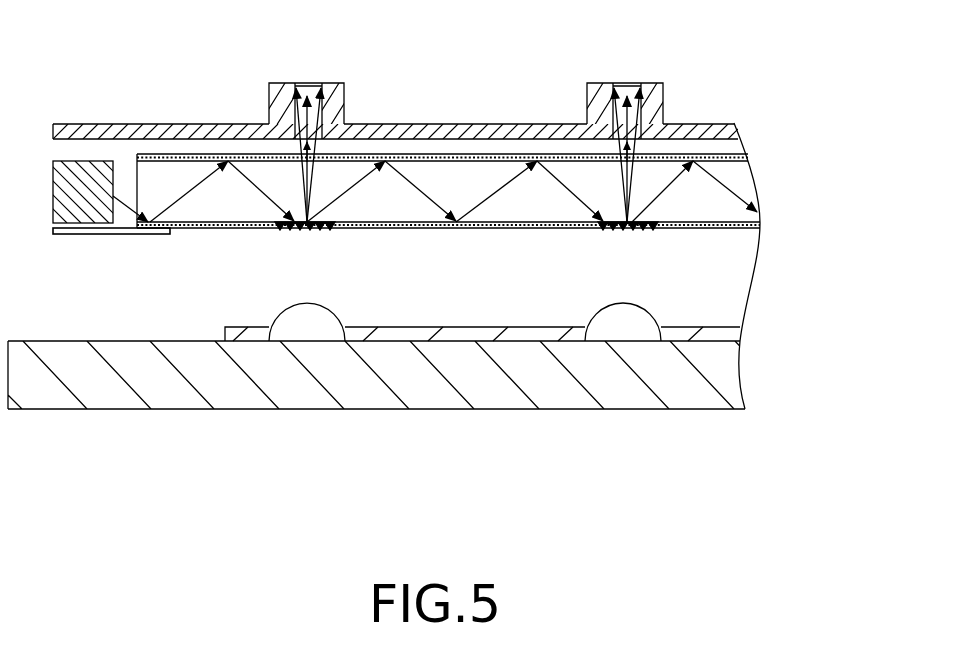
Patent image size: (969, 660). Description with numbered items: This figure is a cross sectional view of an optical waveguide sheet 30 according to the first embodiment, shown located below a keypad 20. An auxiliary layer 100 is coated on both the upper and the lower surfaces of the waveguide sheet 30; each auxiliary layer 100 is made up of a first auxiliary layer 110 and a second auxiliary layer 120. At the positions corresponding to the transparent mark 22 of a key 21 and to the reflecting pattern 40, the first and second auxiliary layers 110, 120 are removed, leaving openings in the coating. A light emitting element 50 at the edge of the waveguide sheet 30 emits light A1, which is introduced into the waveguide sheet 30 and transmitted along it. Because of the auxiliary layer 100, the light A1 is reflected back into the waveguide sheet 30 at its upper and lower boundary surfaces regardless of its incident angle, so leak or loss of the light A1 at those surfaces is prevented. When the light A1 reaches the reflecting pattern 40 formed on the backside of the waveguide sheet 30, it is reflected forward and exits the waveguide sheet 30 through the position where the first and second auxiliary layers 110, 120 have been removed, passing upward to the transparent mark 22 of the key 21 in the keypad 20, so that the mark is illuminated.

The keypad 20 is at (98, 130).
The key 21 is at (283, 90).
The transparent mark 22 is at (313, 88).
The waveguide sheet 30 is at (170, 175).
The reflecting pattern 40 is at (288, 228).
The light emitting element 50 is at (87, 221).
The auxiliary layer 100 is at (513, 194).
The first auxiliary layer 110 is at (748, 161).
The second auxiliary layer 120 is at (748, 157).
The light A1 is at (311, 147).